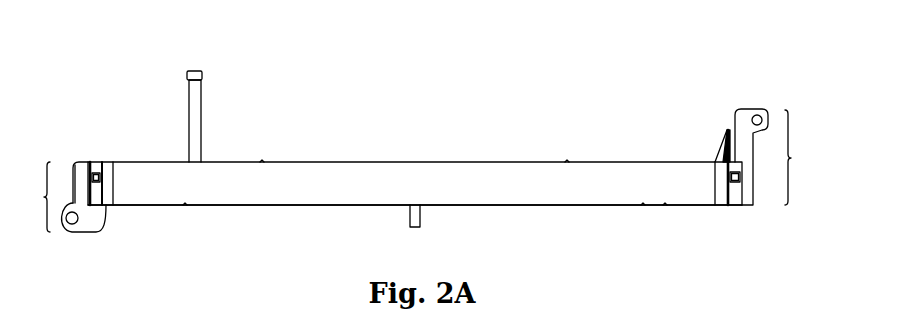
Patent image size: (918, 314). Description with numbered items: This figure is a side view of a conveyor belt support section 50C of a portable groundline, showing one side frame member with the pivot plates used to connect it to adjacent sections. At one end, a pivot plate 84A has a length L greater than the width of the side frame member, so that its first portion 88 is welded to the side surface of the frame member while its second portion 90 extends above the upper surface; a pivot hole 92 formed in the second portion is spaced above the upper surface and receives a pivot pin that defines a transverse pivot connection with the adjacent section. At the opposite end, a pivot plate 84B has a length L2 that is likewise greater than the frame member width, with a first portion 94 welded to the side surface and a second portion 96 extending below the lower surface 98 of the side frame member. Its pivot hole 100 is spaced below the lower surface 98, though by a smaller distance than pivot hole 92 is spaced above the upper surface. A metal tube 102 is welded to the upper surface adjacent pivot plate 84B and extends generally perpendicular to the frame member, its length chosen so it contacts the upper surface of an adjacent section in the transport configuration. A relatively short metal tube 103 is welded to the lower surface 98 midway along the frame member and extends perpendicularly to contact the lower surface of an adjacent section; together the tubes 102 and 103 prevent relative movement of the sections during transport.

The conveyor belt support section 50C is at (403, 108).
The lower surface 98 is at (580, 206).
The metal tube 102 is at (199, 112).
The metal tube 103 is at (416, 212).
The first portion 94 is at (84, 172).
The second portion 96 is at (98, 209).
The pivot plate 84B is at (90, 226).
The pivot hole 100 is at (77, 225).
The first portion 88 is at (718, 188).
The second portion 90 is at (733, 130).
The pivot plate 84A is at (745, 147).
The pivot hole 92 is at (761, 114).
The length L is at (793, 157).
The length L2 is at (38, 197).